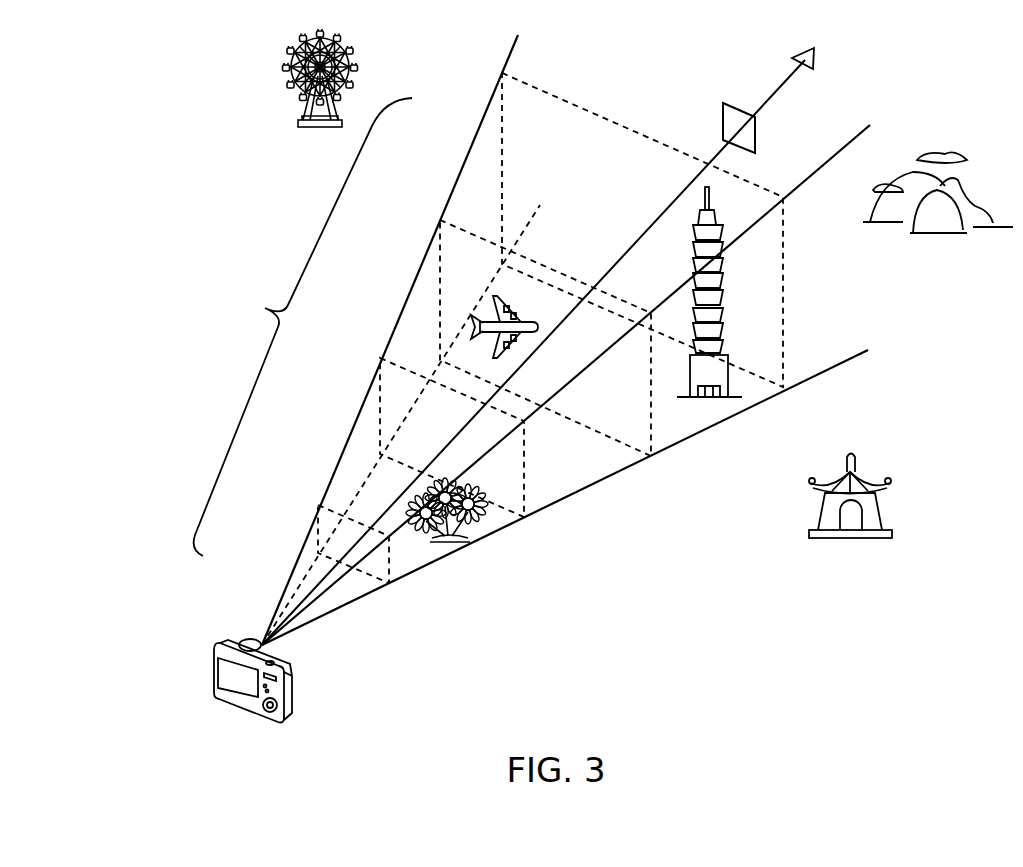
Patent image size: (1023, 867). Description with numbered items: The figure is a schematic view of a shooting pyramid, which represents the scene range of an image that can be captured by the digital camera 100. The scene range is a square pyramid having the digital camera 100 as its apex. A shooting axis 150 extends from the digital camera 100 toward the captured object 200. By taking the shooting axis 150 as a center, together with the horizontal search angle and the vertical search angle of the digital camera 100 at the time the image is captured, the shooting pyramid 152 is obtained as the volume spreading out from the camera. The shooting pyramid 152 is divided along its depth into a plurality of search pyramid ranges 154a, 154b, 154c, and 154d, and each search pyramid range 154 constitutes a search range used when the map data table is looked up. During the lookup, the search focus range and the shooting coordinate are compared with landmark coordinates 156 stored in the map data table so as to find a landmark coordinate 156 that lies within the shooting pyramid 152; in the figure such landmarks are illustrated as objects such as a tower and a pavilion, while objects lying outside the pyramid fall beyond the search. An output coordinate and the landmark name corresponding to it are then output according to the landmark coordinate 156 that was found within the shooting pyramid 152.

The digital camera 100 is at (213, 671).
The shooting axis 150 is at (785, 82).
The shooting pyramid 152 is at (825, 347).
The search pyramid range 154 is at (303, 327).
The search pyramid range 154a is at (303, 568).
The search pyramid range 154b is at (400, 433).
The search pyramid range 154c is at (495, 334).
The search pyramid range 154d is at (591, 226).
The landmark coordinate 156 is at (722, 377).
The captured object 200 is at (732, 110).